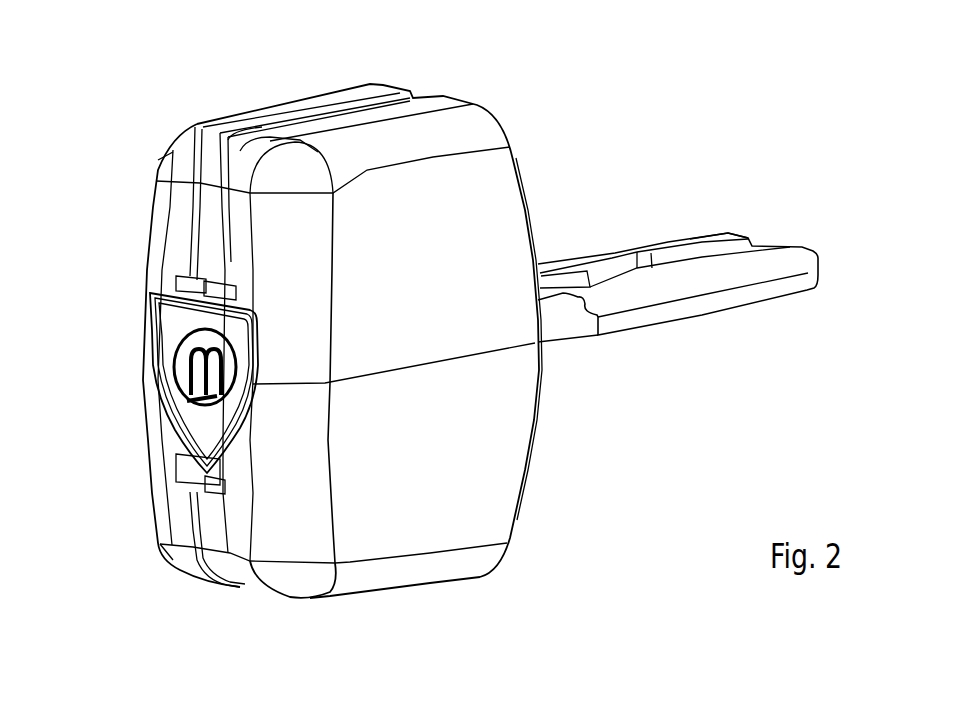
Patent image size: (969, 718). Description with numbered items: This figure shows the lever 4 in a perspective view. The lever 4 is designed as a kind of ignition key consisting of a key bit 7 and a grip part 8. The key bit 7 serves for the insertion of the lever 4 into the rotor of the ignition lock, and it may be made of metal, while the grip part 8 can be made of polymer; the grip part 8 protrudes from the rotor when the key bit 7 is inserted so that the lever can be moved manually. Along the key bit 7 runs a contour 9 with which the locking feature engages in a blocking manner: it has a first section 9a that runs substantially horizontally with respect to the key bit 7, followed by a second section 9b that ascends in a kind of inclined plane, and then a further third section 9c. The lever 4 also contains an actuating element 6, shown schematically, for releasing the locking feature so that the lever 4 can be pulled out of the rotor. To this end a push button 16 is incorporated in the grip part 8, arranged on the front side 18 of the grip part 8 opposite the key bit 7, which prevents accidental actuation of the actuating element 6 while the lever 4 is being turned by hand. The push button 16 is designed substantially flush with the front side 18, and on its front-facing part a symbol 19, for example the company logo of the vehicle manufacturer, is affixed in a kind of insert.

The lever 4 is at (483, 83).
The grip part 8 is at (498, 172).
The front side 18 is at (190, 220).
The push button 16 is at (176, 327).
The symbol 19 is at (183, 367).
The actuating element 6 is at (202, 421).
The key bit 7 is at (722, 278).
The contour 9 is at (656, 258).
The first section 9a is at (703, 250).
The second section 9b is at (620, 270).
The third section 9c is at (547, 283).